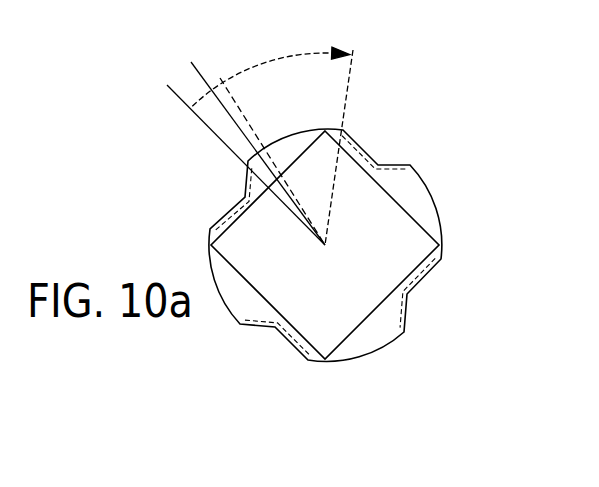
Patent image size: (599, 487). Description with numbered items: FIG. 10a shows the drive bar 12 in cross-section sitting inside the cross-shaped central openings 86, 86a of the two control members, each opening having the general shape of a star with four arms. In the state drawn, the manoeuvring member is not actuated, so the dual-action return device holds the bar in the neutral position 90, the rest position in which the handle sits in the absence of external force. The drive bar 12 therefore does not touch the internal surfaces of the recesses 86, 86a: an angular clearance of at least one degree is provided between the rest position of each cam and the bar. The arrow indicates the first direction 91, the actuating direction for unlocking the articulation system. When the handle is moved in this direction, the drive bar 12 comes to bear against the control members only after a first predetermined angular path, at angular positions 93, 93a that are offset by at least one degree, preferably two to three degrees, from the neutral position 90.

The drive bar 12 is at (420, 228).
The central opening 86 is at (384, 163).
The central opening 86a is at (402, 162).
The neutral position 90 is at (182, 100).
The first direction 91 is at (312, 53).
The angular position 93 is at (210, 87).
The angular position 93a is at (216, 70).